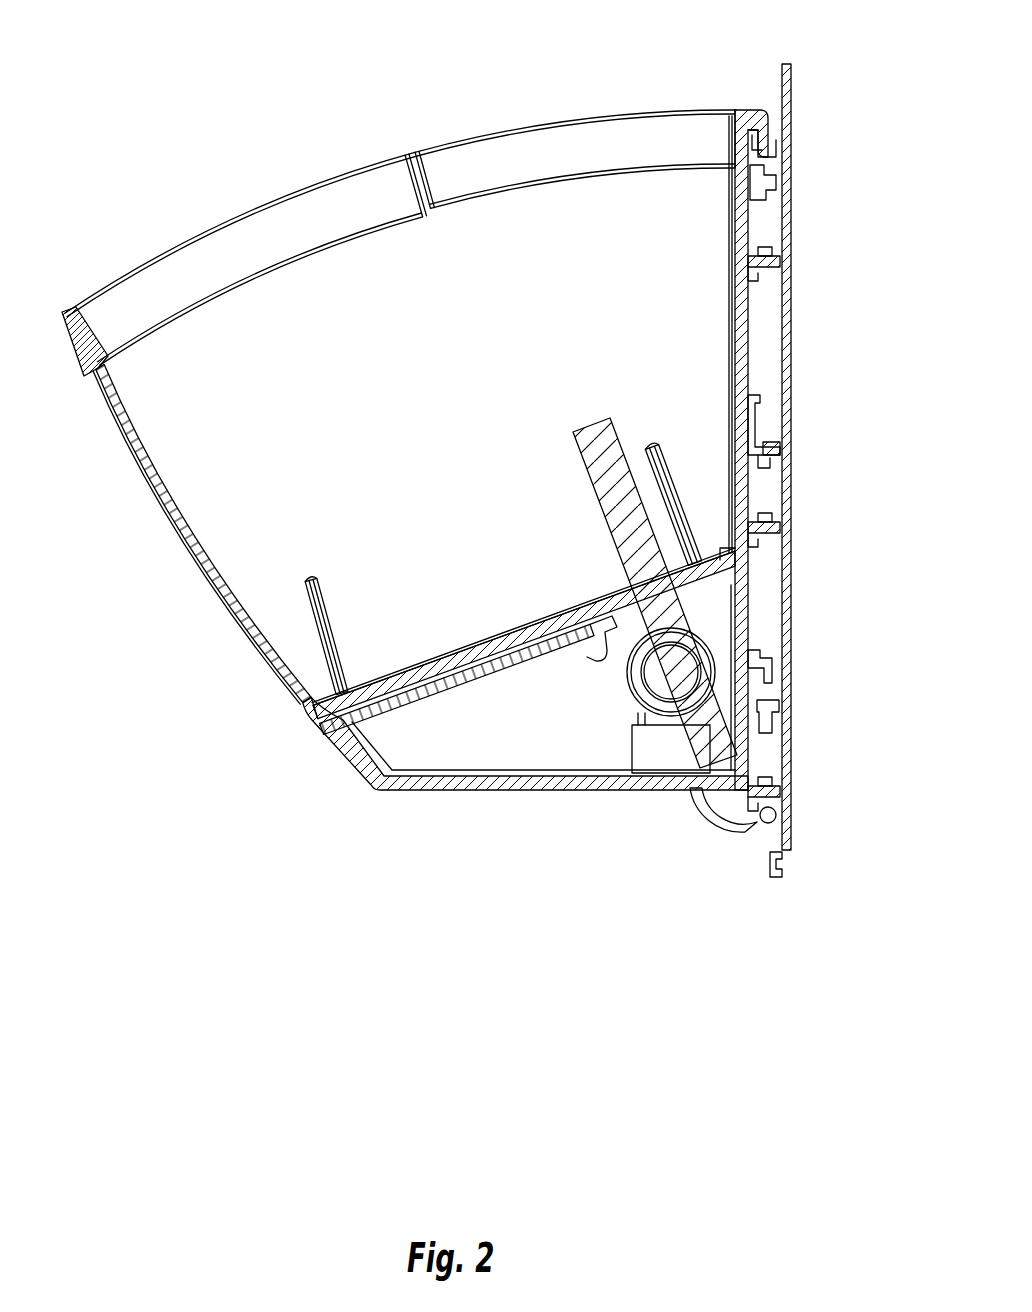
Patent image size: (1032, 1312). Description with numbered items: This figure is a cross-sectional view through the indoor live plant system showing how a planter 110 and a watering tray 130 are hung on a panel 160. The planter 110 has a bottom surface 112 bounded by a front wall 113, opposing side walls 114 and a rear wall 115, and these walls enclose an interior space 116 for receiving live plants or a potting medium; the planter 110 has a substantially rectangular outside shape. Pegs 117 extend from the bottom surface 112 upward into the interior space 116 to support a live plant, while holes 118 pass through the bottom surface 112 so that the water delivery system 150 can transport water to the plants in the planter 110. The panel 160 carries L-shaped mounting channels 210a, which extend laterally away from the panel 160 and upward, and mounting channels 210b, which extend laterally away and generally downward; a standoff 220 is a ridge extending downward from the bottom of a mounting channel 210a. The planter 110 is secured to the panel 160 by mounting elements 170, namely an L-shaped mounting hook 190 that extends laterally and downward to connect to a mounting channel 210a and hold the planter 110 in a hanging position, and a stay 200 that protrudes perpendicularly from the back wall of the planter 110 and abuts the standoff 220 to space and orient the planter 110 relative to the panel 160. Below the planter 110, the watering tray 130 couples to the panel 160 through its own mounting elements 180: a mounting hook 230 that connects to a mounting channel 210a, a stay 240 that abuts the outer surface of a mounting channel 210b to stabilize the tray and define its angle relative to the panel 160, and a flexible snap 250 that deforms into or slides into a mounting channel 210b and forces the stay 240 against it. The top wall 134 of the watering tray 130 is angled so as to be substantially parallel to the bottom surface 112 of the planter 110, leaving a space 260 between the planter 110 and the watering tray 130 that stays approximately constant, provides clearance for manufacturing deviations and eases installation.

The planter 110 is at (165, 488).
The bottom surface 112 is at (330, 717).
The front wall 113 is at (210, 563).
The side walls 114 is at (407, 424).
The rear wall 115 is at (738, 215).
The interior space 116 is at (297, 330).
The pegs 117 is at (327, 630).
The holes 118 is at (618, 575).
The watering tray 130 is at (385, 780).
The top wall 134 is at (400, 700).
The water delivery system 150 is at (596, 436).
The panel 160 is at (786, 64).
The mounting elements 170 is at (745, 88).
The mounting elements 180 is at (685, 818).
The mounting hook 190 is at (760, 135).
The stay 200 is at (748, 450).
The mounting channel 210a is at (758, 185).
The mounting channel 210b is at (755, 260).
The standoff 220 is at (765, 458).
The mounting hook 230 is at (765, 665).
The stay 240 is at (740, 797).
The snap 250 is at (770, 822).
The space 260 is at (308, 722).